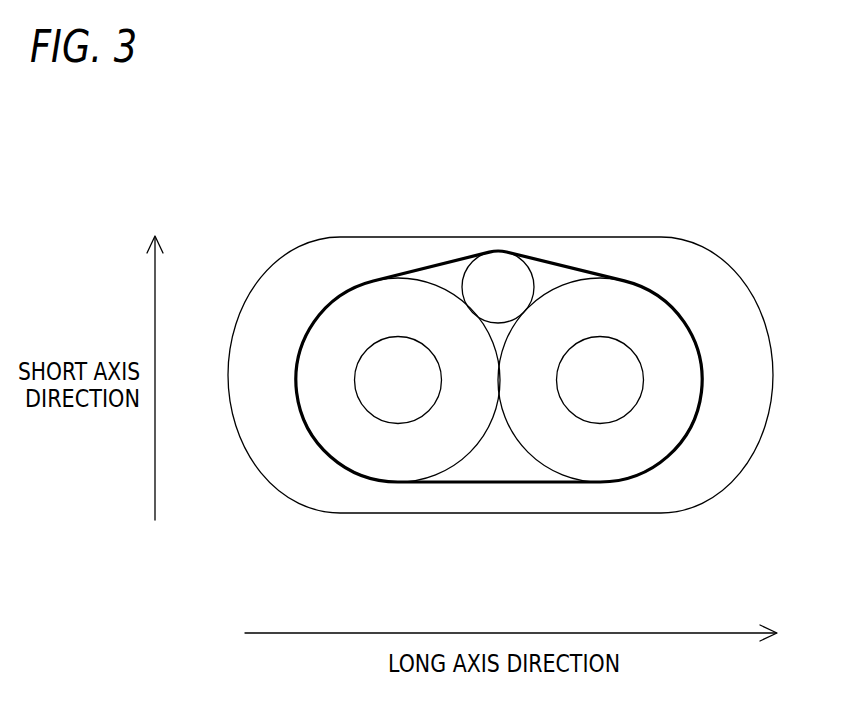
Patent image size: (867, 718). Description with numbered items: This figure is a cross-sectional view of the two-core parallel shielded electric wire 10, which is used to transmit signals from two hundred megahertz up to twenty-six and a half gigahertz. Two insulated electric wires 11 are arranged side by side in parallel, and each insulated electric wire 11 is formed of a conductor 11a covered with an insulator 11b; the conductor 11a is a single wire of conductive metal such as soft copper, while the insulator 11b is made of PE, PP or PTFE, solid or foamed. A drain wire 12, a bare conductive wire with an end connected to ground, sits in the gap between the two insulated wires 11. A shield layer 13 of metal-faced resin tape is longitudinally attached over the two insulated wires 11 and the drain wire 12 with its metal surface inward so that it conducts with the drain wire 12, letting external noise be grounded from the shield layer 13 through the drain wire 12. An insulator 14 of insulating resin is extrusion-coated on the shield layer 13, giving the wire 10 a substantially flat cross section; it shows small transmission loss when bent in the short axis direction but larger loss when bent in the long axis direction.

The two-core parallel shielded electric wire 10 is at (674, 160).
The insulated electric wire 11 is at (488, 578).
The conductor 11a is at (402, 393).
The insulator 11b is at (462, 423).
The drain wire 12 is at (510, 280).
The shield layer 13 is at (427, 268).
The insulator 14 is at (280, 303).